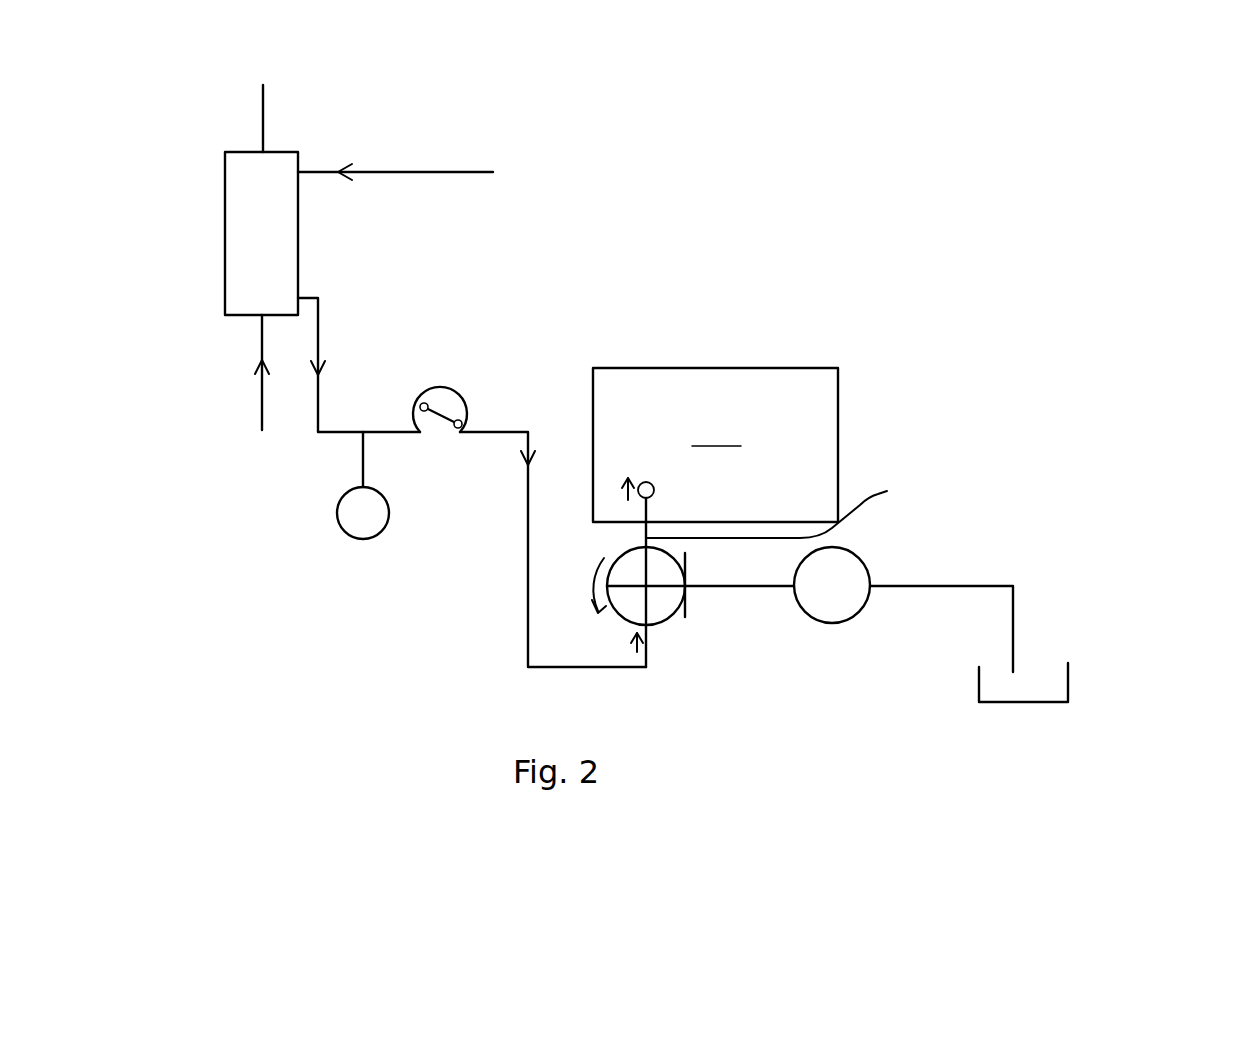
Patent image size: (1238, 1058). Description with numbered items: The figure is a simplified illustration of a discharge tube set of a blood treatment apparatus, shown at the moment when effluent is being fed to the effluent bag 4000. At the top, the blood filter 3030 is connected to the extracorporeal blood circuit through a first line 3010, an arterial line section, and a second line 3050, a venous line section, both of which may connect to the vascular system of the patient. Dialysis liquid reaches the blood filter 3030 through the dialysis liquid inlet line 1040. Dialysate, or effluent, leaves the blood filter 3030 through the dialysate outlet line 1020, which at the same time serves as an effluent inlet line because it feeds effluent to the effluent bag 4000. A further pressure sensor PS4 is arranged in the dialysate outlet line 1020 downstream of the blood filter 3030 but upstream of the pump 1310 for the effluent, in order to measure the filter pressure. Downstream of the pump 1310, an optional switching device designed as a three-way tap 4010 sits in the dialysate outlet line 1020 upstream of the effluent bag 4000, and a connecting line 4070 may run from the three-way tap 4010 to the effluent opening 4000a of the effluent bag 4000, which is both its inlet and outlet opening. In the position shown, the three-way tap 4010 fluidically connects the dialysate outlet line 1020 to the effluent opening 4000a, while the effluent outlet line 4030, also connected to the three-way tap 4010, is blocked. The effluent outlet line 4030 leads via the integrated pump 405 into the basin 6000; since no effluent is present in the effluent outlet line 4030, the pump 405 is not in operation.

The blood filter 3030 is at (173, 202).
The second line 3050 is at (260, 101).
The dialysis liquid inlet line 1040 is at (432, 172).
The first line 3010 is at (262, 401).
The dialysate outlet line 1020 is at (320, 393).
The pump 1310 is at (440, 387).
The effluent bag 4000 is at (715, 445).
The effluent opening 4000a is at (648, 482).
The three-way tap 4010 is at (668, 622).
The connecting line 4070 is at (799, 509).
The pump 405 is at (867, 562).
The effluent outlet line 4030 is at (930, 586).
The basin 6000 is at (1052, 685).
The pressure sensor PS4 is at (363, 501).